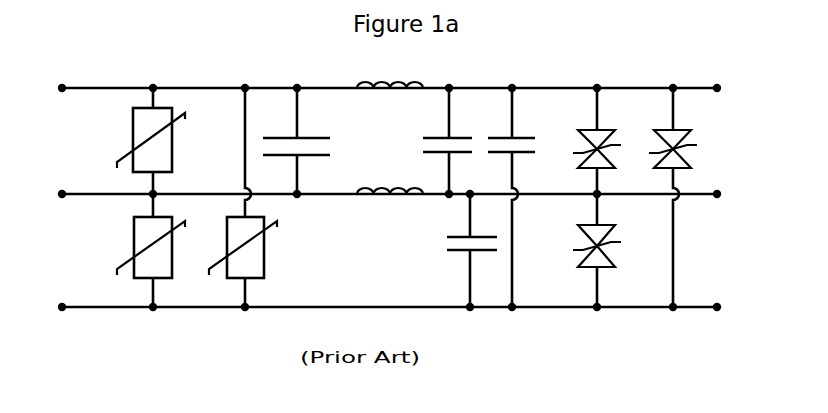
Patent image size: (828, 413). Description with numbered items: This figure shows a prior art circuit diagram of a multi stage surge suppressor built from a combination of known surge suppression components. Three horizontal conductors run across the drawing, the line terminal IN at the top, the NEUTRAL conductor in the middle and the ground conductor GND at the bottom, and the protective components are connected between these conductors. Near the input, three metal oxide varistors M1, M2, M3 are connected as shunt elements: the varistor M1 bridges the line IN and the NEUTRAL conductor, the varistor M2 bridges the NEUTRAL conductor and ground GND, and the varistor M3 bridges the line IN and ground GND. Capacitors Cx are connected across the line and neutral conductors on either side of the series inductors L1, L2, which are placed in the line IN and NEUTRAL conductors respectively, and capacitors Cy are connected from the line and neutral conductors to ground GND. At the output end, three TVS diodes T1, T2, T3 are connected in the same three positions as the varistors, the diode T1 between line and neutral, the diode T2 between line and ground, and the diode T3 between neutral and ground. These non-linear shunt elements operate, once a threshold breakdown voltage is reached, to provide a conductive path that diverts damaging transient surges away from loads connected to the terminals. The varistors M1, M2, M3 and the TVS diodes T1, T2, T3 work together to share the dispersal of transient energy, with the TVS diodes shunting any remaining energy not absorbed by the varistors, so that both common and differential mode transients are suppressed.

The line input terminal IN is at (386, 100).
The neutral terminal NEUTRAL is at (379, 205).
The ground terminal GND is at (384, 297).
The metal oxide varistor M1 is at (162, 141).
The metal oxide varistor M2 is at (138, 250).
The metal oxide varistor M3 is at (257, 197).
The X capacitor Cx is at (367, 141).
The Y capacitor Cy is at (479, 197).
The line inductor L1 is at (390, 78).
The neutral inductor L2 is at (390, 183).
The TVS diode T1 is at (590, 141).
The TVS diode T2 is at (676, 197).
The TVS diode T3 is at (604, 250).